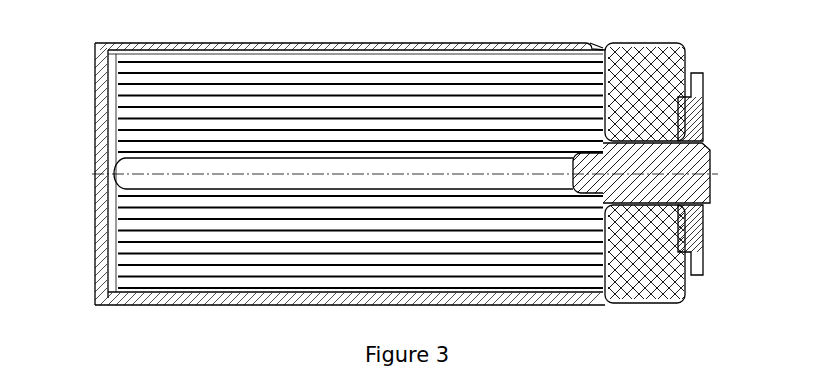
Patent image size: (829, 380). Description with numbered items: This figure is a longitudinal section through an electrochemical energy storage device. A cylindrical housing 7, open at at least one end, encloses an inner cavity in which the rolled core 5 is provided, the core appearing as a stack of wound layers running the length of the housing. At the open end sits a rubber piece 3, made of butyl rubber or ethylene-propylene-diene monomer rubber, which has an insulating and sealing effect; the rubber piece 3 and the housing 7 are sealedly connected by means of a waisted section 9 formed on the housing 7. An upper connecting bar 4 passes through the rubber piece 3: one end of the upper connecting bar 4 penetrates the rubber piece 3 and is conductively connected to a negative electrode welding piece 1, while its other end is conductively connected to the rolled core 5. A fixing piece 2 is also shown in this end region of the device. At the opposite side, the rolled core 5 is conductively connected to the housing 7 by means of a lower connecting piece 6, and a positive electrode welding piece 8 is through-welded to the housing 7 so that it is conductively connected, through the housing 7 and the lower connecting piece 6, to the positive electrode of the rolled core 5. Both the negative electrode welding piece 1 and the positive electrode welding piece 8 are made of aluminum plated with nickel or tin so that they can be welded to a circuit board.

The negative electrode welding piece 1 is at (697, 107).
The fixing piece 2 is at (687, 226).
The rubber piece 3 is at (658, 92).
The upper connecting bar 4 is at (668, 158).
The rolled core 5 is at (338, 88).
The lower connecting piece 6 is at (112, 143).
The housing 7 is at (250, 42).
The positive electrode welding piece 8 is at (98, 82).
The waisted section 9 is at (594, 49).